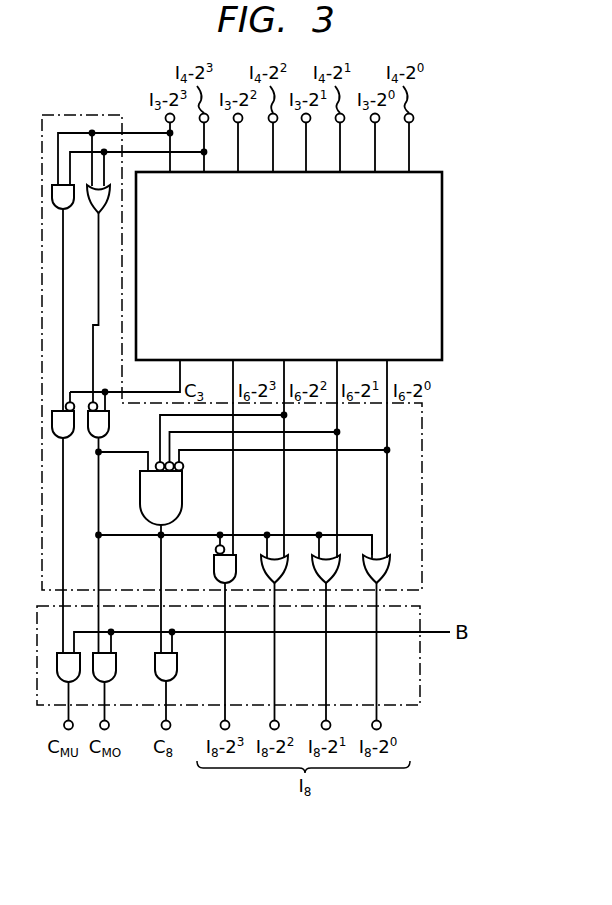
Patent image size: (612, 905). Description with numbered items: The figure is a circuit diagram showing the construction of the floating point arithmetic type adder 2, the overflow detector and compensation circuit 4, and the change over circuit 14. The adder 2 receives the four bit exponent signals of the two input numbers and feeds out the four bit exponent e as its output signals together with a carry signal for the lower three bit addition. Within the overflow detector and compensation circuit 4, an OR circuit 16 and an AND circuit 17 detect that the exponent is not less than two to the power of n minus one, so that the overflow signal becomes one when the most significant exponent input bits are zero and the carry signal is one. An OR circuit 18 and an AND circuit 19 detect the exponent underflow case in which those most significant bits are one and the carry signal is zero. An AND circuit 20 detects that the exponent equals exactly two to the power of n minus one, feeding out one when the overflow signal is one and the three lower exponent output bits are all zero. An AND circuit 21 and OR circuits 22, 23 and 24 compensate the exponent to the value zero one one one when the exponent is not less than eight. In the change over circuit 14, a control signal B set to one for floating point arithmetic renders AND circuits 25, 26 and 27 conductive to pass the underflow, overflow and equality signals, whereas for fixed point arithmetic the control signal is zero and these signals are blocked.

The floating point arithmetic type adder 2 is at (450, 230).
The overflow detector and compensation circuit 4 is at (433, 474).
The change over circuit 14 is at (432, 679).
The OR circuit 16 is at (106, 210).
The AND circuit 17 is at (109, 424).
The OR circuit 18 is at (71, 209).
The AND circuit 19 is at (72, 438).
The AND circuit 20 is at (182, 488).
The AND circuit 21 is at (236, 560).
The OR circuit 22 is at (288, 560).
The OR circuit 23 is at (340, 560).
The OR circuit 24 is at (390, 560).
The AND circuit 25 is at (79, 664).
The AND circuit 26 is at (115, 664).
The AND circuit 27 is at (176, 664).